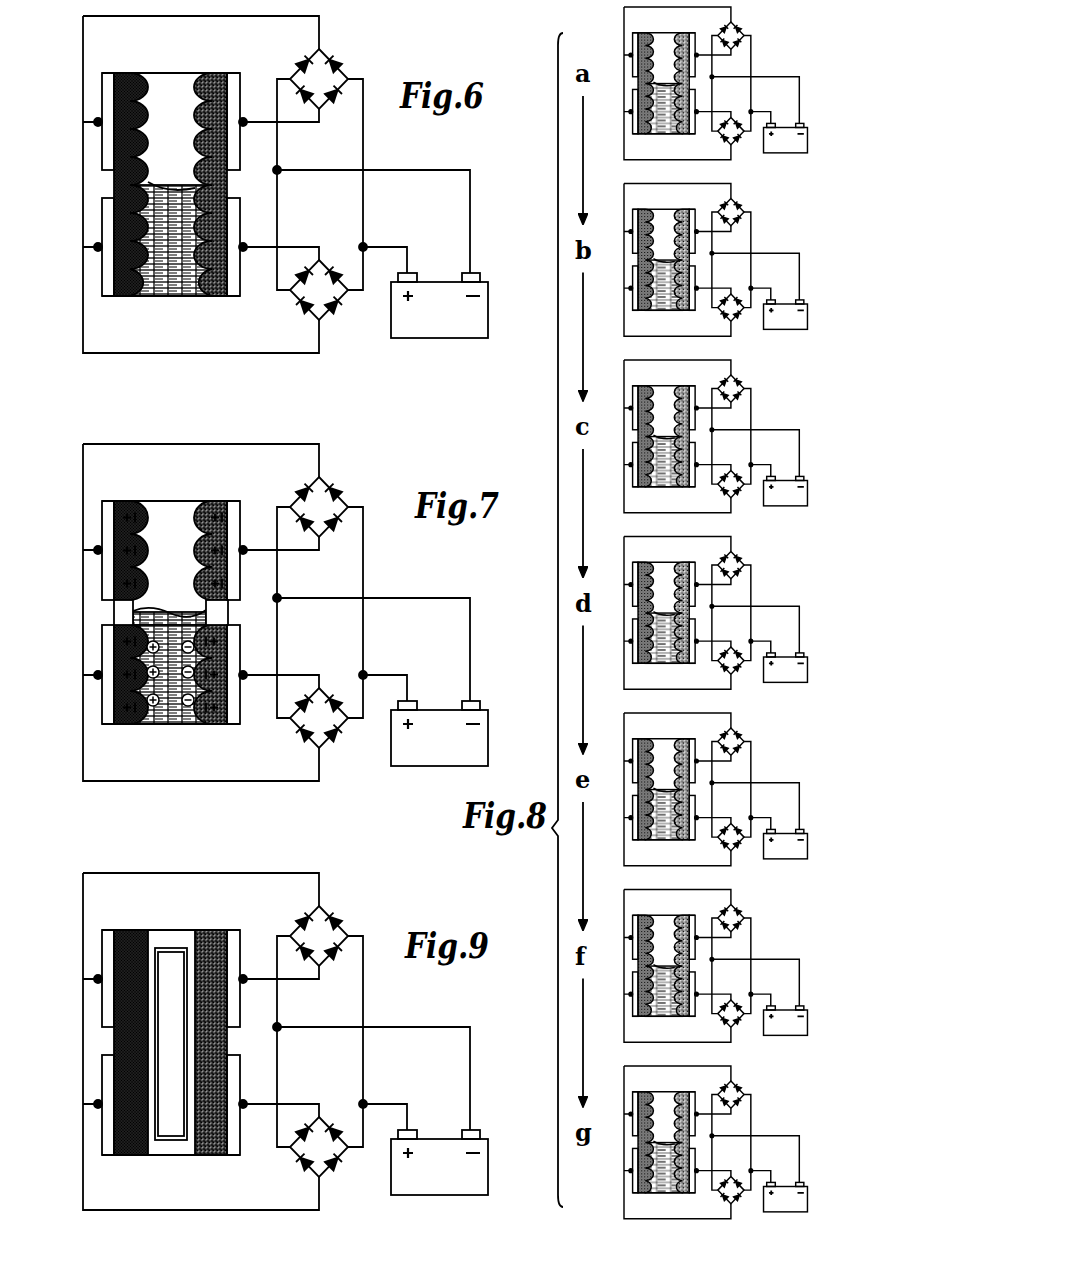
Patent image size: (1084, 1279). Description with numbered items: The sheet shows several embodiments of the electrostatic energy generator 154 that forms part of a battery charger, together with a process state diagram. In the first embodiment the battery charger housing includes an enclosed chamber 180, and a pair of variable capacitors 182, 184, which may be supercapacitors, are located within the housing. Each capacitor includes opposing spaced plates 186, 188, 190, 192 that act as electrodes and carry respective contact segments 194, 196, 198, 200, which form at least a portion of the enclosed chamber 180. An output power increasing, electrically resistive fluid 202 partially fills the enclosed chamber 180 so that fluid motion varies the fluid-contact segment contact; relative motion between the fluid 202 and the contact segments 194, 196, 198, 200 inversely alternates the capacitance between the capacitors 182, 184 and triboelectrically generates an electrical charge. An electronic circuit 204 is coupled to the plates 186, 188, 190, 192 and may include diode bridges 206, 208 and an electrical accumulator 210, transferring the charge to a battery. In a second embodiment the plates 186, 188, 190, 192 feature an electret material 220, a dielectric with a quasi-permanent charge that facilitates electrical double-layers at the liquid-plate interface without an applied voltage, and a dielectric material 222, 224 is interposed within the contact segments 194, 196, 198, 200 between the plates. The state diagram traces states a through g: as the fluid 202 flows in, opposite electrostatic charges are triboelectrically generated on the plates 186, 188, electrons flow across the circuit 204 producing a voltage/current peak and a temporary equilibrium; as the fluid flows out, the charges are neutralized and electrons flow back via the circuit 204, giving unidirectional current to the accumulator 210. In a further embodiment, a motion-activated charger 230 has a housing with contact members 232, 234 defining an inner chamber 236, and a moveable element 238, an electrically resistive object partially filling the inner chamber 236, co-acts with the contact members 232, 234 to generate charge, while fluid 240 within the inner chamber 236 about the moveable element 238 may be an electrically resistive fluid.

In FIG. 6, the electrostatic energy generator 154 is at (269, 184).
In FIG. 7, the electrostatic energy generator 154 is at (261, 600).
In FIG. 9, the electrostatic energy generator 154 is at (261, 1031).
In FIG. 8, the electrostatic energy generator 154 is at (773, 41).
In FIG. 6, the enclosed chamber 180 is at (146, 186).
In FIG. 7, the enclosed chamber 180 is at (174, 614).
In FIG. 8, the enclosed chamber 180 is at (662, 611).
In FIG. 6, the variable capacitor 182 is at (76, 96).
In FIG. 7, the variable capacitor 182 is at (76, 525).
In FIG. 9, the variable capacitor 182 is at (76, 953).
In FIG. 6, the variable capacitor 184 is at (76, 274).
In FIG. 7, the variable capacitor 184 is at (76, 701).
In FIG. 9, the variable capacitor 184 is at (76, 1131).
In FIG. 6, the opposing spaced plate 186 is at (102, 86).
In FIG. 7, the opposing spaced plate 186 is at (102, 525).
In FIG. 9, the opposing spaced plate 186 is at (102, 953).
In FIG. 6, the opposing spaced plate 188 is at (240, 86).
In FIG. 7, the opposing spaced plate 188 is at (241, 525).
In FIG. 9, the opposing spaced plate 188 is at (241, 953).
In FIG. 6, the opposing spaced plate 190 is at (102, 298).
In FIG. 7, the opposing spaced plate 190 is at (101, 701).
In FIG. 9, the opposing spaced plate 190 is at (101, 1131).
In FIG. 6, the opposing spaced plate 192 is at (240, 298).
In FIG. 7, the opposing spaced plate 192 is at (241, 701).
In FIG. 9, the opposing spaced plate 192 is at (241, 1131).
In FIG. 6, the contact segment 194 is at (152, 73).
In FIG. 7, the contact segment 194 is at (139, 529).
In FIG. 8, the contact segment 194 is at (648, 37).
In FIG. 6, the contact segment 196 is at (195, 110).
In FIG. 7, the contact segment 196 is at (193, 536).
In FIG. 8, the contact segment 196 is at (686, 37).
In FIG. 6, the contact segment 198 is at (153, 296).
In FIG. 7, the contact segment 198 is at (139, 697).
In FIG. 6, the contact segment 200 is at (188, 288).
In FIG. 7, the contact segment 200 is at (203, 697).
In FIG. 6, the output power increasing, electrically resistive fluid 202 is at (167, 185).
In FIG. 7, the output power increasing, electrically resistive fluid 202 is at (199, 661).
In FIG. 8, the output power increasing, electrically resistive fluid 202 is at (661, 83).
In FIG. 6, the electronic circuit 204 is at (382, 226).
In FIG. 7, the electronic circuit 204 is at (382, 654).
In FIG. 9, the electronic circuit 204 is at (382, 1087).
In FIG. 8, the electronic circuit 204 is at (771, 75).
In FIG. 6, the diode bridge 206 is at (334, 61).
In FIG. 7, the diode bridge 206 is at (342, 497).
In FIG. 9, the diode bridge 206 is at (341, 926).
In FIG. 6, the diode bridge 208 is at (336, 306).
In FIG. 7, the diode bridge 208 is at (338, 721).
In FIG. 9, the diode bridge 208 is at (338, 1150).
In FIG. 6, the electrical accumulator 210 is at (435, 281).
In FIG. 7, the electrical accumulator 210 is at (439, 703).
In FIG. 9, the electrical accumulator 210 is at (439, 1132).
In FIG. 7, the electret material 220 is at (174, 612).
In FIG. 7, the dielectric material 222 is at (146, 577).
In FIG. 7, the dielectric material 224 is at (197, 586).
In FIG. 9, the motion-activated charger 230 is at (146, 1037).
In FIG. 9, the contact member 232 is at (139, 1021).
In FIG. 9, the contact member 234 is at (203, 1021).
In FIG. 9, the inner chamber 236 is at (169, 886).
In FIG. 9, the moveable element 238 is at (182, 1073).
In FIG. 9, the fluid 240 is at (165, 1077).